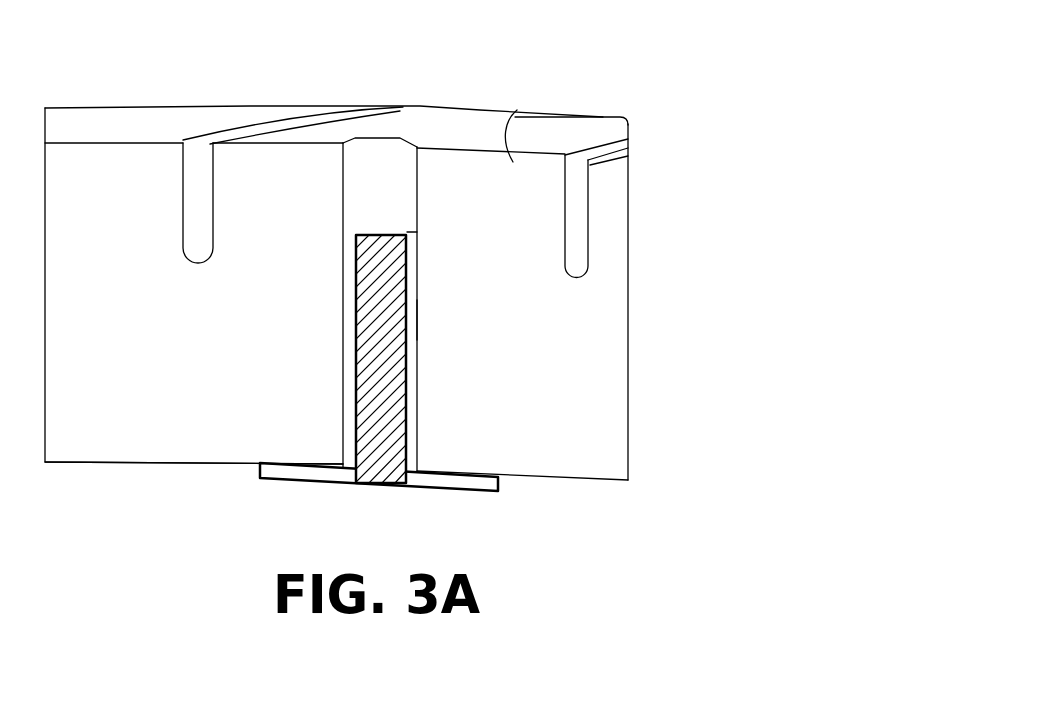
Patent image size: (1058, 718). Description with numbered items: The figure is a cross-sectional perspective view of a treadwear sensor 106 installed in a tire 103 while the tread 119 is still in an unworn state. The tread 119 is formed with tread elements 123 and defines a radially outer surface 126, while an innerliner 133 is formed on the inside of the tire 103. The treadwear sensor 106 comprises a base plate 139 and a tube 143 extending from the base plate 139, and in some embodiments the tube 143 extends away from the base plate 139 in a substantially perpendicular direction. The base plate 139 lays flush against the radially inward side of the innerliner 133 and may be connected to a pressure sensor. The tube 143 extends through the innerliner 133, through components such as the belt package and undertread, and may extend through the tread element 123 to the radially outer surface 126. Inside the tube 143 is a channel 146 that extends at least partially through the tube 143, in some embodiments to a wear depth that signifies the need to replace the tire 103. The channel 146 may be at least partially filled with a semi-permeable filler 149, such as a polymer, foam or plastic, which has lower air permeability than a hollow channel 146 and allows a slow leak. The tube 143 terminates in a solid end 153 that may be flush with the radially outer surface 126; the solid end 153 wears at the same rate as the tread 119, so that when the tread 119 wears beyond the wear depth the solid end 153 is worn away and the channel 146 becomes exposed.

The tire 103 is at (713, 193).
The tread 119 is at (603, 117).
The tread element 123 is at (517, 110).
The radially outer surface 126 is at (258, 143).
The solid end 153 is at (388, 140).
The tube 143 is at (390, 186).
The semi-permeable filler 149 is at (407, 230).
The treadwear sensor 106 is at (420, 322).
The channel 146 is at (408, 381).
The innerliner 133 is at (203, 462).
The base plate 139 is at (458, 490).